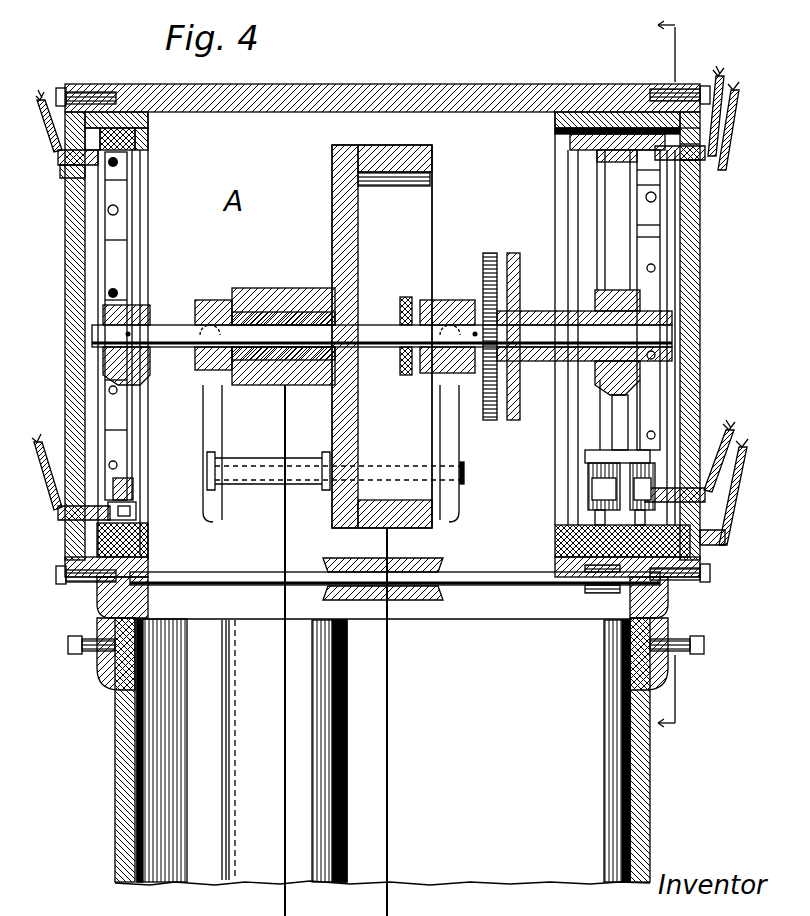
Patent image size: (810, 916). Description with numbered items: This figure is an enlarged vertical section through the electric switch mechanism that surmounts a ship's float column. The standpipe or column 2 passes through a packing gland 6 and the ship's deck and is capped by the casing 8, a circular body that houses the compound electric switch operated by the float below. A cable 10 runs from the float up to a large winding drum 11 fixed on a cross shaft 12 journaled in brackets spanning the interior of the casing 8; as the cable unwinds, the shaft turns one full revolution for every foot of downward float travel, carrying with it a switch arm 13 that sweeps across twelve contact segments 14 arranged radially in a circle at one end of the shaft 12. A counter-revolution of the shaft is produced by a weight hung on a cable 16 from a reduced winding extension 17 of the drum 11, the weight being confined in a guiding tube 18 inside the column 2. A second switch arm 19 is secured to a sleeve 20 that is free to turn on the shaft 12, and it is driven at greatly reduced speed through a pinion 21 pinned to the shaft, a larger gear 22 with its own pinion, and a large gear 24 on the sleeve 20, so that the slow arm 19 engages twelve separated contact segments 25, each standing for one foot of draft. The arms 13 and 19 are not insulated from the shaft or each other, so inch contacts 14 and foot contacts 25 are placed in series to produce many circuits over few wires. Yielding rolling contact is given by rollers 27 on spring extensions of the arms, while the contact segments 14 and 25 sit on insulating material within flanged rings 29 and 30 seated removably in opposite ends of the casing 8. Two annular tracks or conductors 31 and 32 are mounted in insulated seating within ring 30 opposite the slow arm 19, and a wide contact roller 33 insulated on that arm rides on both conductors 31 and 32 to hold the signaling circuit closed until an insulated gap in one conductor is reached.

The standpipe or column 2 is at (115, 829).
The packing gland 6 is at (675, 376).
The cap or casing 8 is at (65, 251).
The cable 10 is at (388, 832).
The winding drum 11 is at (412, 530).
The cross shaft 12 is at (174, 318).
The switch arm 13 is at (140, 459).
The contact segments 14 is at (138, 515).
The cable 16 is at (286, 908).
The reduced winding extension 17 is at (259, 294).
The guiding tube 18 is at (383, 750).
The second rotatable switch arm 19 is at (612, 407).
The sleeve 20 is at (587, 342).
The pinion 21 is at (480, 363).
The gear 22 is at (483, 348).
The large gear 24 is at (518, 348).
The contact segments 25 is at (702, 536).
The rollers 27 is at (137, 489).
The flanged ring 29 is at (150, 553).
The flanged ring 30 is at (555, 543).
The annular track or conductor 31 is at (562, 587).
The annular track or conductor 32 is at (602, 594).
The wide contact roller 33 is at (590, 499).